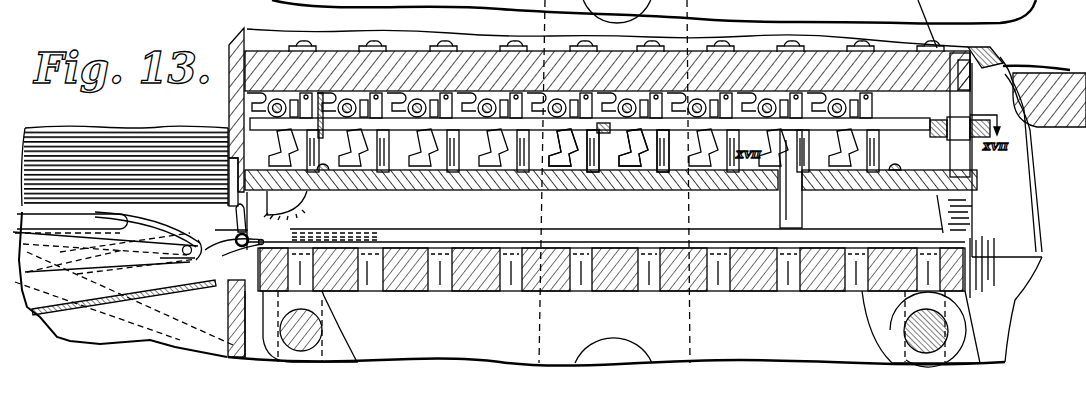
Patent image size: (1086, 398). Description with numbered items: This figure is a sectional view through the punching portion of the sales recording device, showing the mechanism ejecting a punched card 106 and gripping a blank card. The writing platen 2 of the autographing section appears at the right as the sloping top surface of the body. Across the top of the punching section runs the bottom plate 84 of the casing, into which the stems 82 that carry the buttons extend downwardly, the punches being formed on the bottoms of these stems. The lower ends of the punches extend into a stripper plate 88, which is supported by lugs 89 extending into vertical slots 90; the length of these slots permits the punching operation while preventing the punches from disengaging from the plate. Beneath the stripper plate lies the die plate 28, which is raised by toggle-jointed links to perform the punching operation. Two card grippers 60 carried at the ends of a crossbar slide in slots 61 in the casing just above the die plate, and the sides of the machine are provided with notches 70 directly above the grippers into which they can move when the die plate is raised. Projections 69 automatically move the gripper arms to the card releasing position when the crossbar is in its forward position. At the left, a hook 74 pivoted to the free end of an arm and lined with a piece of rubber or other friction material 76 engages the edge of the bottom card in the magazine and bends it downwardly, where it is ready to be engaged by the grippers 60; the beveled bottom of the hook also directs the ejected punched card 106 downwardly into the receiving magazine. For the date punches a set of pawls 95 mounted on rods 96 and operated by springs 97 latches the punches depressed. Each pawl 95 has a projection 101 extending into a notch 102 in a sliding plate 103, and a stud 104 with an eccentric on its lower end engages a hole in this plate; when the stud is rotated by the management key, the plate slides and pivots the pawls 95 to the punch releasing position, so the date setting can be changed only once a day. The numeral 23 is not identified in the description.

The writing platen 2 is at (1057, 108).
The upper part 23 is at (437, 47).
The die plate 28 is at (472, 283).
The card grippers 60 is at (367, 240).
The slots 61 is at (470, 229).
The projections 69 is at (295, 195).
The notches 70 is at (989, 212).
The hook 74 is at (207, 248).
The friction material 76 is at (215, 247).
The stems 82 is at (508, 45).
The bottom plate 84 is at (403, 66).
The stripper plate 88 is at (800, 195).
The lugs 89 is at (352, 188).
The vertical slots 90 is at (895, 170).
The pawls 95 is at (625, 150).
The rods 96 is at (837, 100).
The springs 97 is at (748, 130).
The projection 101 is at (545, 150).
The notch 102 is at (605, 148).
The sliding plate 103 is at (670, 160).
The stud 104 is at (965, 105).
The punched card 106 is at (63, 306).